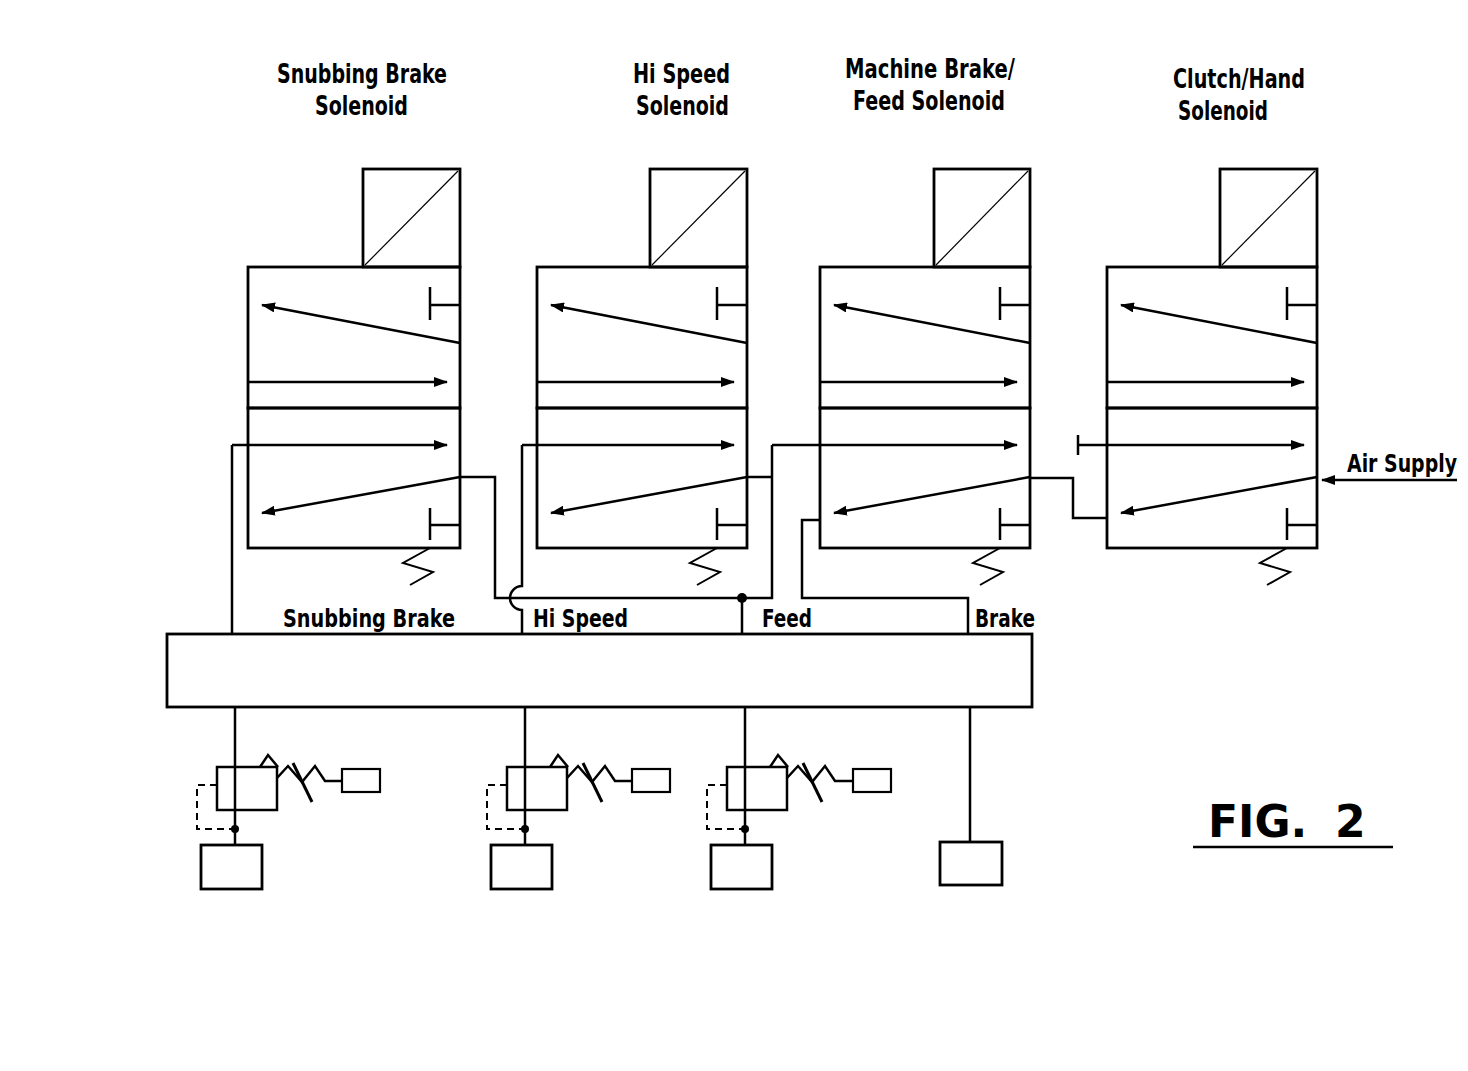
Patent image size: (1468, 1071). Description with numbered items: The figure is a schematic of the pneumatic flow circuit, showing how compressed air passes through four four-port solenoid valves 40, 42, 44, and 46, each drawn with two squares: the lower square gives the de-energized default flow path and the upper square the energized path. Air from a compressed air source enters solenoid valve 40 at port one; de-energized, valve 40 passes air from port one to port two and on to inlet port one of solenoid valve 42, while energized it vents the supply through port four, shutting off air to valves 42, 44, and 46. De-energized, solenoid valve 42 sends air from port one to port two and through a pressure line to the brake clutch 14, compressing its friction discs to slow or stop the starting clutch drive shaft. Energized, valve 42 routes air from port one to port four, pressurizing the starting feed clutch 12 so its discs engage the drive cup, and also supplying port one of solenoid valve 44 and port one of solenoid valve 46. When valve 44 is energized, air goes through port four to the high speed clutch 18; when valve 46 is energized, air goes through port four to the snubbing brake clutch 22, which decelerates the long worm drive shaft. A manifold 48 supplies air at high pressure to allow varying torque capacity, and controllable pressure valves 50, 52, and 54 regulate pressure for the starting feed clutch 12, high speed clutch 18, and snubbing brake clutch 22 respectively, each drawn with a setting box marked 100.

The solenoid valve 40 is at (1317, 205).
The solenoid valve 42 is at (1030, 205).
The solenoid valve 44 is at (747, 205).
The solenoid valve 46 is at (460, 205).
The manifold 48 is at (1032, 663).
The controllable pressure valve 50 is at (787, 800).
The controllable pressure valve 52 is at (567, 800).
The controllable pressure valve 54 is at (277, 800).
The starting feed clutch 12 is at (772, 868).
The brake clutch 14 is at (1002, 868).
The high speed clutch 18 is at (552, 868).
The snubbing brake clutch 22 is at (262, 868).
The pressure gauge 100 is at (616, 780).